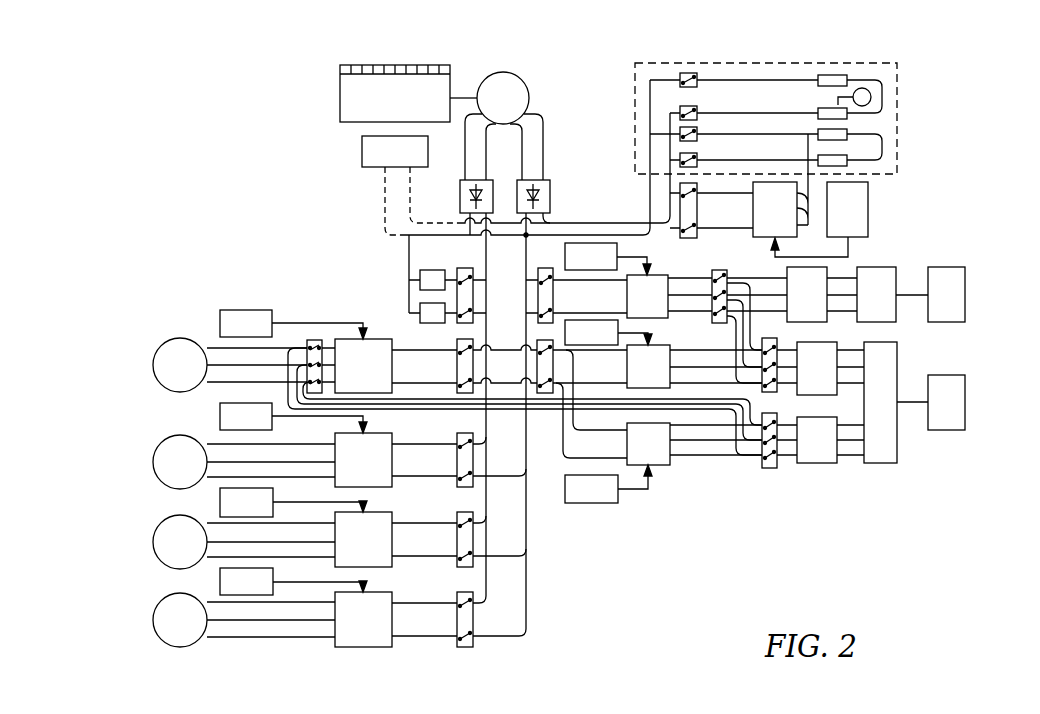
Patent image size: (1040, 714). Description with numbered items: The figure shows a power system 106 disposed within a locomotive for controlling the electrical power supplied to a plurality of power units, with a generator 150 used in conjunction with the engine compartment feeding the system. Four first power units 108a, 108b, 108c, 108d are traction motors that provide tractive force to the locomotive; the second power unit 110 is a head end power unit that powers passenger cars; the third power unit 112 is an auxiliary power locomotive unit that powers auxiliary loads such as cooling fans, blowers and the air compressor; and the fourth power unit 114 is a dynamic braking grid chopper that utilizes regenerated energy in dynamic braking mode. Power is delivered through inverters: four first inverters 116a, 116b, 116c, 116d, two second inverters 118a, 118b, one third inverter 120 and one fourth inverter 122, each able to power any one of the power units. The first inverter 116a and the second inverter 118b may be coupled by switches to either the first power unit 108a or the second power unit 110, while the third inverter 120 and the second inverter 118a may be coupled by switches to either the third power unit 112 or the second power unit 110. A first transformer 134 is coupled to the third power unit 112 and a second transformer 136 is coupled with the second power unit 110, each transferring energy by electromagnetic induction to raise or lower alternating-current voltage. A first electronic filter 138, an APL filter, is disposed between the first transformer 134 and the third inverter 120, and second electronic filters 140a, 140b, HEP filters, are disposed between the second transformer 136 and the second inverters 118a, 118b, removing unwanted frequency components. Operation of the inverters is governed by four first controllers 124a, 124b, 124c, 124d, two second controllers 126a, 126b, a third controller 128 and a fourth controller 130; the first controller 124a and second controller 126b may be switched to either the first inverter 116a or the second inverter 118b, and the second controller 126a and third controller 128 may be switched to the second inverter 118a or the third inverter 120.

The power system 106 is at (980, 108).
The fourth power unit 114 is at (897, 90).
The generator 150 is at (490, 106).
The fourth inverter 122 is at (762, 218).
The fourth controller 130 is at (835, 218).
The third controller 128 is at (578, 265).
The third inverter 120 is at (635, 305).
The second controller 126a is at (575, 341).
The second inverter 118a is at (632, 375).
The second controller 126b is at (575, 497).
The second inverter 118b is at (632, 452).
The first electronic filter 138 is at (794, 303).
The first transformer 134 is at (864, 303).
The third power unit 112 is at (934, 303).
The second electronic filter 140a is at (801, 376).
The second electronic filter 140b is at (801, 448).
The second transformer 136 is at (867, 411).
The second power unit 110 is at (934, 410).
The first controller 124a is at (230, 331).
The first controller 124b is at (230, 424).
The first controller 124c is at (230, 510).
The first controller 124d is at (230, 590).
The first inverter 116a is at (347, 374).
The first inverter 116b is at (347, 468).
The first inverter 116c is at (347, 548).
The first inverter 116d is at (347, 628).
The first power unit 108a is at (164, 373).
The first power unit 108b is at (164, 470).
The first power unit 108c is at (164, 550).
The first power unit 108d is at (164, 628).